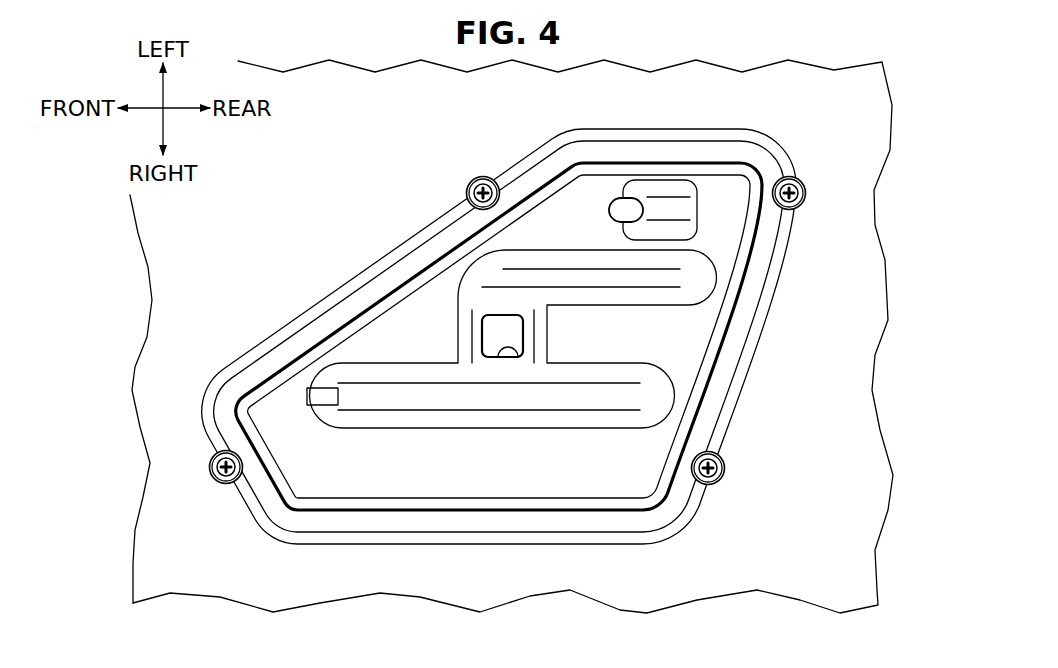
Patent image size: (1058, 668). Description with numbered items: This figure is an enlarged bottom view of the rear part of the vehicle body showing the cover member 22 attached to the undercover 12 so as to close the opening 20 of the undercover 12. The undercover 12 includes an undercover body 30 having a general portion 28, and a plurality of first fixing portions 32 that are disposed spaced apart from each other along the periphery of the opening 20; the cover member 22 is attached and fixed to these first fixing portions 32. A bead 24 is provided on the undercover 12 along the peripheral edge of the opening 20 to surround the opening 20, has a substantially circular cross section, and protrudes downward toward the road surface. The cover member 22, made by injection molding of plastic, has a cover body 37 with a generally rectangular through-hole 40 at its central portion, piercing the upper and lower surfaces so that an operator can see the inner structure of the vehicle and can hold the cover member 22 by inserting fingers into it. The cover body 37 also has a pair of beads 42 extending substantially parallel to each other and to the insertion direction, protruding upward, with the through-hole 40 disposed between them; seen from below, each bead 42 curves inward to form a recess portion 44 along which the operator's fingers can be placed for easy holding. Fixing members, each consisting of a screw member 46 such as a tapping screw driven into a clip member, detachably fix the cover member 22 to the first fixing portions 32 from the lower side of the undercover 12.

The undercover 12 is at (878, 192).
The opening 20 is at (521, 361).
The cover member 22 is at (278, 490).
The bead 24 is at (662, 128).
The general portion 28 is at (190, 283).
The undercover body 30 is at (843, 363).
The first fixing portion 32 is at (518, 178).
The cover body 37 is at (653, 333).
The through-hole 40 is at (517, 357).
The bead 42 is at (513, 282).
The recess portion 44 is at (573, 277).
The screw member 46 is at (474, 180).